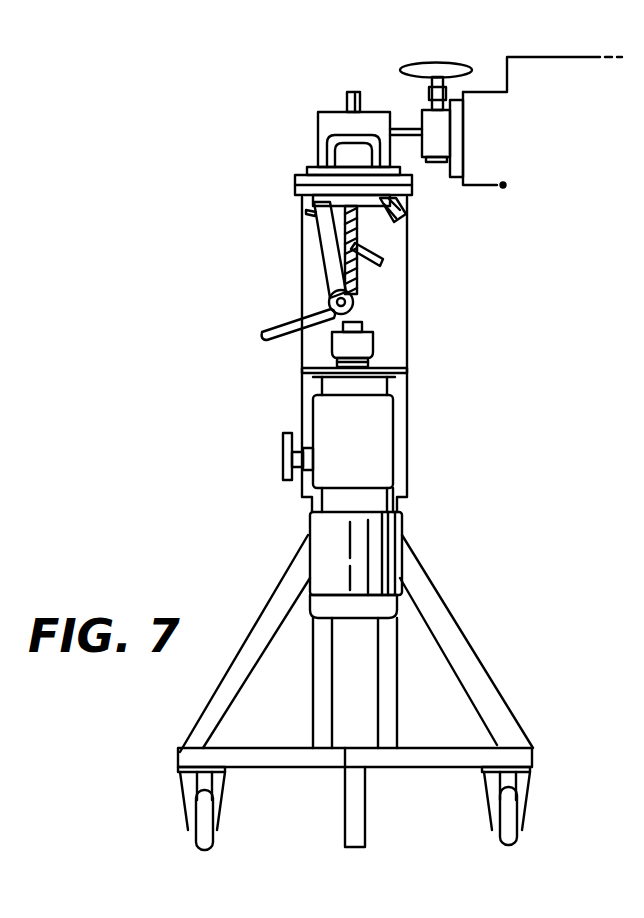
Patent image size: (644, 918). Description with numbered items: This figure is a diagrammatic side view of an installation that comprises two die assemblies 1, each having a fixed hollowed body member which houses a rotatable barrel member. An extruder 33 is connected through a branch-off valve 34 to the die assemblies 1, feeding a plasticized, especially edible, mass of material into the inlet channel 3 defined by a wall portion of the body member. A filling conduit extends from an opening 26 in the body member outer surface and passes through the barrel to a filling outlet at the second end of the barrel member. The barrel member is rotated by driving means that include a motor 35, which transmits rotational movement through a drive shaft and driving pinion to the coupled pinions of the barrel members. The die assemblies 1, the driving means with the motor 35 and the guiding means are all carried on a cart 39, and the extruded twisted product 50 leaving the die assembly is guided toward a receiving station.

The die assembly 1 is at (318, 113).
The opening 26 is at (346, 92).
The inlet channel 3 is at (401, 125).
The extruder 33 is at (535, 78).
The branch-off valve 34 is at (436, 140).
The extruded twisted product 50 is at (274, 326).
The motor 35 is at (398, 524).
The cart 39 is at (437, 615).